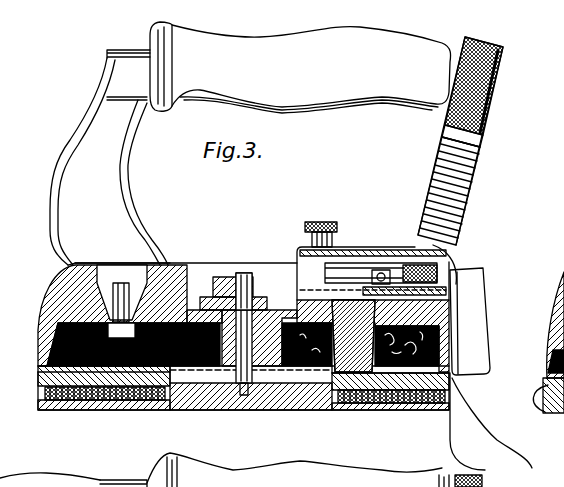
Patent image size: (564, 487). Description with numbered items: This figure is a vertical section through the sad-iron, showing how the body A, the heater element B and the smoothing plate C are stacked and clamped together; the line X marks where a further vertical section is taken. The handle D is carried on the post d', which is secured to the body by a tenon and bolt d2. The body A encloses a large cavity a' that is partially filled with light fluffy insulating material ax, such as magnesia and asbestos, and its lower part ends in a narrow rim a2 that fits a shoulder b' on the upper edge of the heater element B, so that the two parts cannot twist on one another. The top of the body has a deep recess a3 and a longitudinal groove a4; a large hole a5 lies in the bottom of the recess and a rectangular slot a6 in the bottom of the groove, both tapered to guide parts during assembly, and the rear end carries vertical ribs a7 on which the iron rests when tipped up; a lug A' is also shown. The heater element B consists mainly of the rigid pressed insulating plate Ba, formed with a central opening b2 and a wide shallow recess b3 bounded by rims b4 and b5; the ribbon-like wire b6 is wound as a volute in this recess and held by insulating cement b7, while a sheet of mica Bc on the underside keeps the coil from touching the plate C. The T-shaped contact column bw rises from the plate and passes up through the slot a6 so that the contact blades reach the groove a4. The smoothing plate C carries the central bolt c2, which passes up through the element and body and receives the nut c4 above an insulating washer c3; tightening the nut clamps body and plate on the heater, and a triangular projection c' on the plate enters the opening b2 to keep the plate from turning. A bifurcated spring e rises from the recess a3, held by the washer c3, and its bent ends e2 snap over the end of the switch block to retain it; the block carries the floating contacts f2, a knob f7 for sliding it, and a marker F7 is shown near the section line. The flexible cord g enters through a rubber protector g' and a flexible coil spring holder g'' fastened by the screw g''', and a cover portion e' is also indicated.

The handle D is at (300, 67).
The post d' is at (110, 157).
The bolt d2 is at (150, 258).
The body A is at (237, 308).
The cavity a' is at (269, 326).
The rim a2 is at (452, 376).
The recess a3 is at (193, 275).
The longitudinal groove a4 is at (299, 262).
The hole a5 is at (242, 298).
The slot a6 is at (359, 262).
The vertical ribs a7 is at (452, 292).
The insulating material ax is at (452, 350).
The terminal lug A' is at (470, 321).
The insulating washer c3 is at (213, 290).
The nut c4 is at (220, 285).
The central bolt c2 is at (245, 380).
The triangular projection c' is at (289, 428).
The smoothing plate C is at (162, 411).
The spring e is at (373, 249).
The cover plate e' is at (276, 284).
The bent ends e2 is at (456, 252).
The knob f7 is at (323, 237).
The section marker F7 is at (360, 185).
The contacts f2 is at (380, 245).
The flexible cord g is at (501, 154).
The rubber protector g' is at (474, 142).
The flexible coil spring holder g'' is at (475, 141).
The screw g''' is at (381, 251).
The heater element B is at (40, 388).
The shoulder b' is at (268, 356).
The central opening b2 is at (203, 372).
The shallow recess b3 is at (62, 396).
The rim b4 is at (55, 408).
The rim b5 is at (170, 411).
The ribbon-like wire b6 is at (127, 406).
The insulating cement b7 is at (126, 411).
The contact column bw is at (348, 412).
The sheet of mica Bc is at (481, 428).
The insulating plate Ba is at (498, 427).
The section line X is at (371, 0).